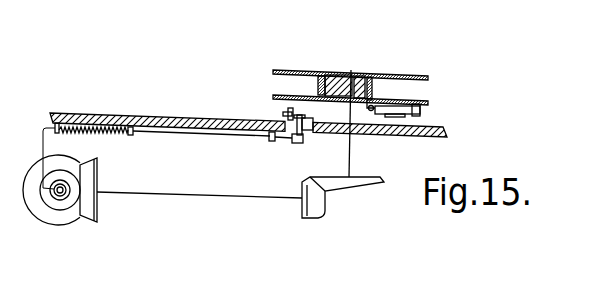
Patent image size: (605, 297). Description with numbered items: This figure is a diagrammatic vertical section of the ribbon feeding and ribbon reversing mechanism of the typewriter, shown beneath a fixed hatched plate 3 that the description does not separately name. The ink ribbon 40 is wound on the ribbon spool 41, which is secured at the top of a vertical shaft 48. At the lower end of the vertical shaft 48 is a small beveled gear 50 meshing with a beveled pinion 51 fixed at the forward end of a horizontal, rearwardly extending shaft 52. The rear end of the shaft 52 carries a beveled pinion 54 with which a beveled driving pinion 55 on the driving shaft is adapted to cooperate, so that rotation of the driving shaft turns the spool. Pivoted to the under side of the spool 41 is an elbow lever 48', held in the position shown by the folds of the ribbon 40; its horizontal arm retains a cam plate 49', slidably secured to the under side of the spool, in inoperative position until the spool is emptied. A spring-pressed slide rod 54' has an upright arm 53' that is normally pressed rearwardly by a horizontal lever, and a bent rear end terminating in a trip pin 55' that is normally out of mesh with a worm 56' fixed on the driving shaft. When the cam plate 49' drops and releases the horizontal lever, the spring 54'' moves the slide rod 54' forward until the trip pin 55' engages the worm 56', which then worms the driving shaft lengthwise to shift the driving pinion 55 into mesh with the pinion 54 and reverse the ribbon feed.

The hatched support bar 3 is at (166, 116).
The ribbon spool 41 is at (295, 71).
The ink ribbon 40 is at (372, 88).
The vertical shaft 48 is at (333, 123).
The elbow lever 48' is at (385, 135).
The cam plate 49' is at (412, 110).
The beveled pinion 51 is at (284, 113).
The beveled gear 50 is at (357, 192).
The upright arm 53' is at (317, 119).
The slide rod 54' is at (218, 148).
The spring 54'' is at (99, 143).
The beveled driving pinion 55 is at (55, 182).
The worm 56' is at (65, 217).
The trip pin 55' is at (27, 173).
The beveled pinion 54 is at (103, 190).
The horizontal shaft 52 is at (227, 197).